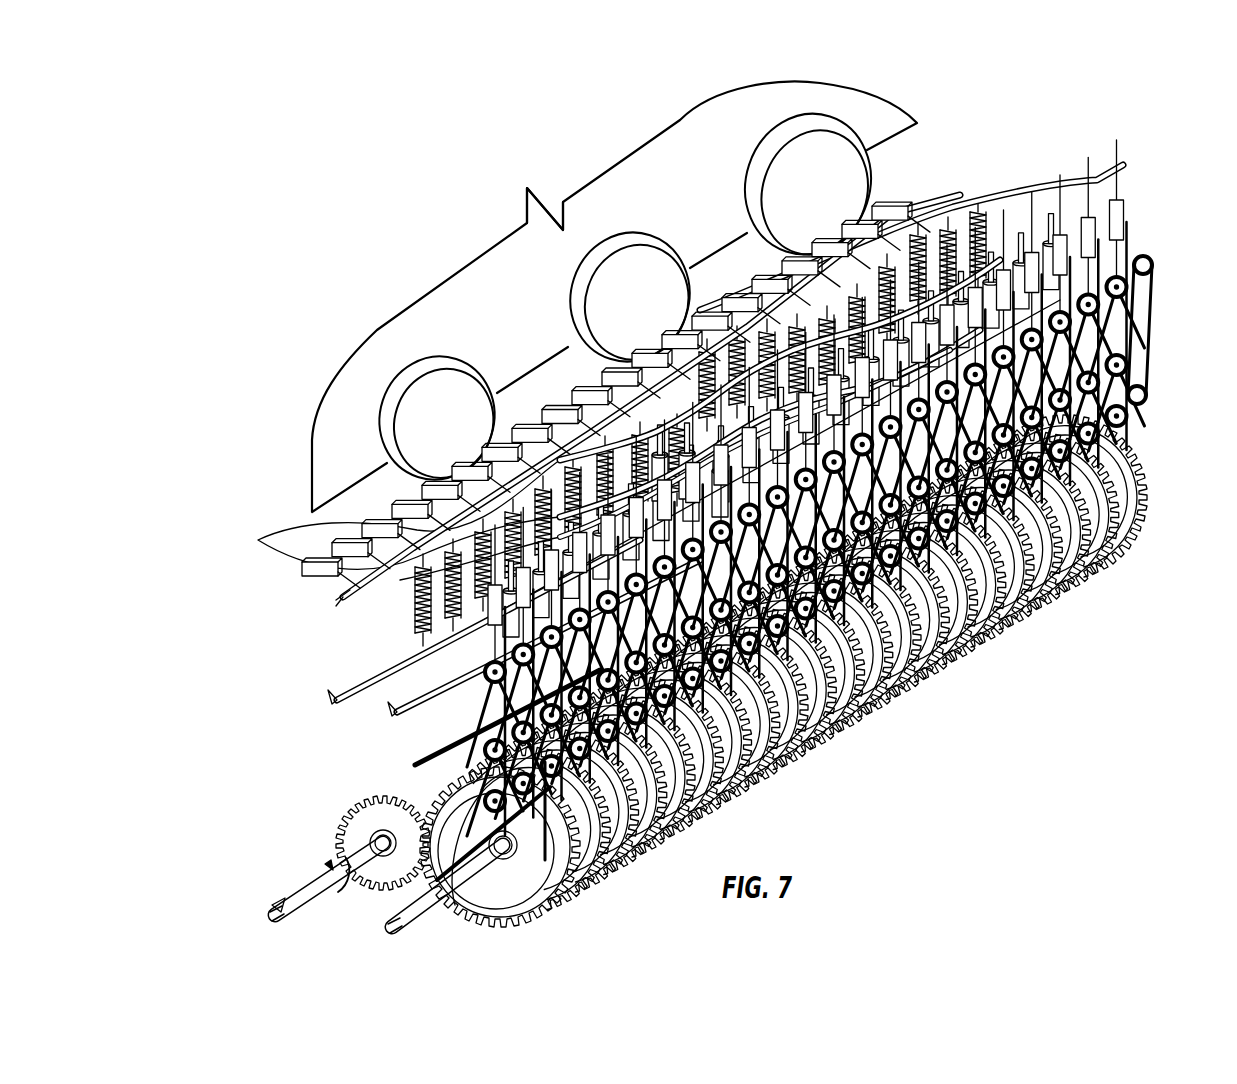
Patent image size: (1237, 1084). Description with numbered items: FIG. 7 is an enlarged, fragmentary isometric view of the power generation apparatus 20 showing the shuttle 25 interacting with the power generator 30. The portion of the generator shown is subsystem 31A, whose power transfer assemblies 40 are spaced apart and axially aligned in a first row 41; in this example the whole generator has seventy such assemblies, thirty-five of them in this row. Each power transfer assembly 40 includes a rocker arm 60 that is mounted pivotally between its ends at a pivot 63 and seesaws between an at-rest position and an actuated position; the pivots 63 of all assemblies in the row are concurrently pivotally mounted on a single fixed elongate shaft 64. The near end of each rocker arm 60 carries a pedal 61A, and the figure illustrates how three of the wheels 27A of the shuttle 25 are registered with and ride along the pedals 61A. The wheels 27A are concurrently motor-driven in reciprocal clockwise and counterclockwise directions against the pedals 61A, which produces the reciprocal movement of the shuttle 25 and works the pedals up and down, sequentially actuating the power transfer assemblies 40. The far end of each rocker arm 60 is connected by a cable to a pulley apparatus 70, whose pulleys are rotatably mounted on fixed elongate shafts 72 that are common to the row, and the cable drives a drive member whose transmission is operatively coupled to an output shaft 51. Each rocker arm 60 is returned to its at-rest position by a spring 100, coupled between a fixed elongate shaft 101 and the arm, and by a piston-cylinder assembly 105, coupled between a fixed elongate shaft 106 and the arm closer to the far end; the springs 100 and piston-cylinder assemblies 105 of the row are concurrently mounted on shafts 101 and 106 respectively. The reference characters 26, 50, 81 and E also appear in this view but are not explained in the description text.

The power generation apparatus 20 is at (1166, 192).
The shuttle 25 is at (684, 120).
The housing wall 26 is at (595, 210).
The wheels 27A is at (828, 152).
The power generator 30 is at (935, 200).
The subsystem 31A is at (272, 905).
The power transfer assembly 40 is at (577, 887).
The first row 41 is at (826, 656).
The drive shaft 50 is at (303, 878).
The output shaft 51 is at (297, 908).
The rocker arm 60 is at (985, 225).
The pedal 61A is at (258, 538).
The pivot 63 is at (560, 450).
The elongate shaft 64 is at (336, 598).
The pulley apparatus 70 is at (1160, 333).
The elongate shafts 72 is at (405, 745).
The secondary shaft 81 is at (427, 897).
The spring 100 is at (417, 602).
The elongate shaft 101 is at (337, 698).
The piston-cylinder assembly 105 is at (490, 620).
The elongate shaft 106 is at (405, 713).
The rotation direction E is at (333, 868).